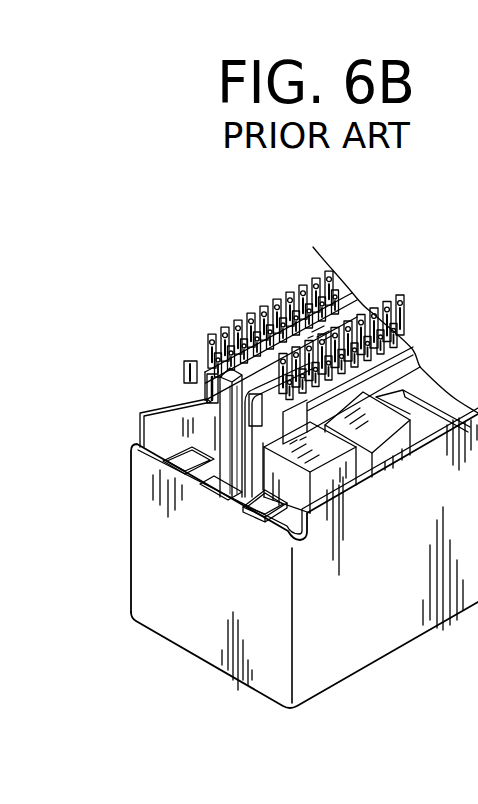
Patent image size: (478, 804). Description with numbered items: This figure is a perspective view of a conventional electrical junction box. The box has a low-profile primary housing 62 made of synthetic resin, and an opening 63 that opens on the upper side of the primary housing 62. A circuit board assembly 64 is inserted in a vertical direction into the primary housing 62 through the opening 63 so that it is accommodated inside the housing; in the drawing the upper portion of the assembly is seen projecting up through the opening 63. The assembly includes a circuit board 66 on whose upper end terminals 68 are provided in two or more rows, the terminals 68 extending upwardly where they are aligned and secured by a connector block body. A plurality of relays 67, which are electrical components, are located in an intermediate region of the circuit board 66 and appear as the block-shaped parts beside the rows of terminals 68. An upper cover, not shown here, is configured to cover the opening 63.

The primary housing 62 is at (128, 541).
The opening 63 is at (167, 440).
The circuit board assembly 64 is at (362, 303).
The circuit board 66 is at (247, 507).
The relays 67 is at (343, 485).
The terminals 68 is at (277, 289).